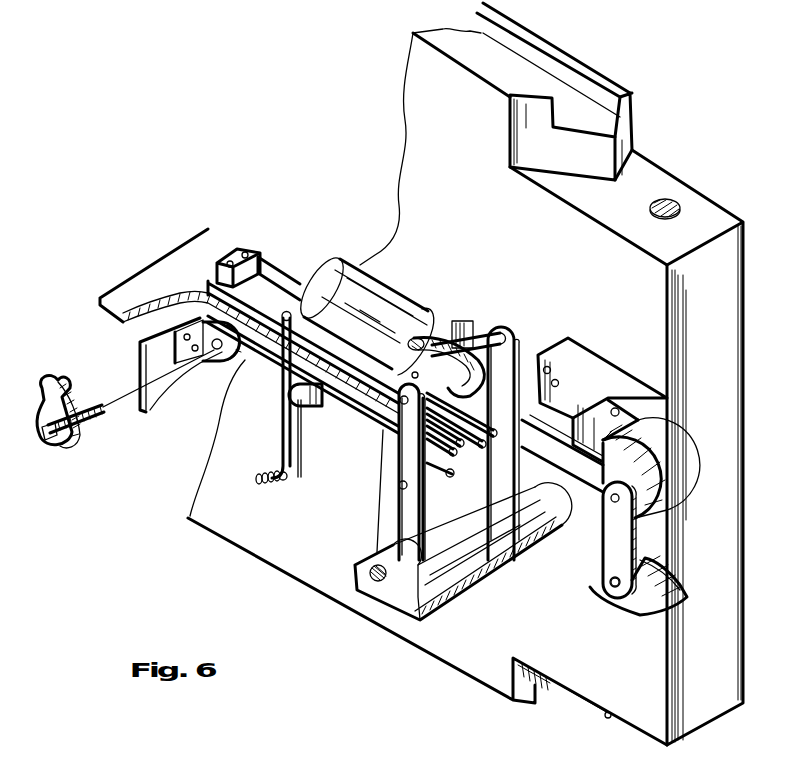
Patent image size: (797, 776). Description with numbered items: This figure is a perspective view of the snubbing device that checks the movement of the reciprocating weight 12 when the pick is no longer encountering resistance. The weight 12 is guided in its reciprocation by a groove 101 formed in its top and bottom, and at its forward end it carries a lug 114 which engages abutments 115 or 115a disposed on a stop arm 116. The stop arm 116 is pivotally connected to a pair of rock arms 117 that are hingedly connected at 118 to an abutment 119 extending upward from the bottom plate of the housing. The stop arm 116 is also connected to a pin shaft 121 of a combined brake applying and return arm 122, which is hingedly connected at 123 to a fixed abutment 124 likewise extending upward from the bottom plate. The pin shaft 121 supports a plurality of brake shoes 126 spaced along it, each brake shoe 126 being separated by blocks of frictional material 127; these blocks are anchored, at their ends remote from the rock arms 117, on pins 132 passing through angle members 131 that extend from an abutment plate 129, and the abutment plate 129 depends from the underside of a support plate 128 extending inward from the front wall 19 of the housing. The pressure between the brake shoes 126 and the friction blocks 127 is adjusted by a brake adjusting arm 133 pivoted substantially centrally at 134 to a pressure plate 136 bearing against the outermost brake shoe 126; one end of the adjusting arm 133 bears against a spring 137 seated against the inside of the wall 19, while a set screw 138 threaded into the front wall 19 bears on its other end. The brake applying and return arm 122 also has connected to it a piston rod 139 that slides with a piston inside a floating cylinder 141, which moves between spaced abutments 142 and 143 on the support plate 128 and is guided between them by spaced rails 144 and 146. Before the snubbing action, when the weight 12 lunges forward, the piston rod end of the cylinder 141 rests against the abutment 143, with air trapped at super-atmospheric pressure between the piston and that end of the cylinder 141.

The weight 12 is at (469, 228).
The front wall 19 is at (57, 387).
The groove 101 is at (585, 93).
The lug 114 is at (575, 393).
The abutment 115 is at (647, 463).
The abutment 115a is at (450, 318).
The stop arm 116 is at (583, 490).
The rock arms 117 is at (652, 530).
The hinge connection 118 is at (608, 590).
The abutment 119 is at (642, 603).
The pin shaft 121 is at (494, 445).
The brake applying and return arm 122 is at (503, 365).
The hinge connection 123 is at (370, 570).
The fixed abutment 124 is at (462, 600).
The brake shoes 126 is at (428, 412).
The blocks of frictional material 127 is at (268, 363).
The support plate 128 is at (153, 268).
The abutment plate 129 is at (155, 398).
The angle members 131 is at (220, 365).
The pins 132 is at (220, 347).
The brake adjusting arm 133 is at (281, 453).
The pivot 134 is at (292, 413).
The pressure plate 136 is at (316, 415).
The spring 137 is at (268, 488).
The set screw 138 is at (97, 417).
The piston rod 139 is at (498, 335).
The floating cylinder 141 is at (370, 287).
The abutment 142 is at (242, 250).
The abutment 143 is at (419, 339).
The rail 144 is at (270, 257).
The rail 146 is at (292, 255).